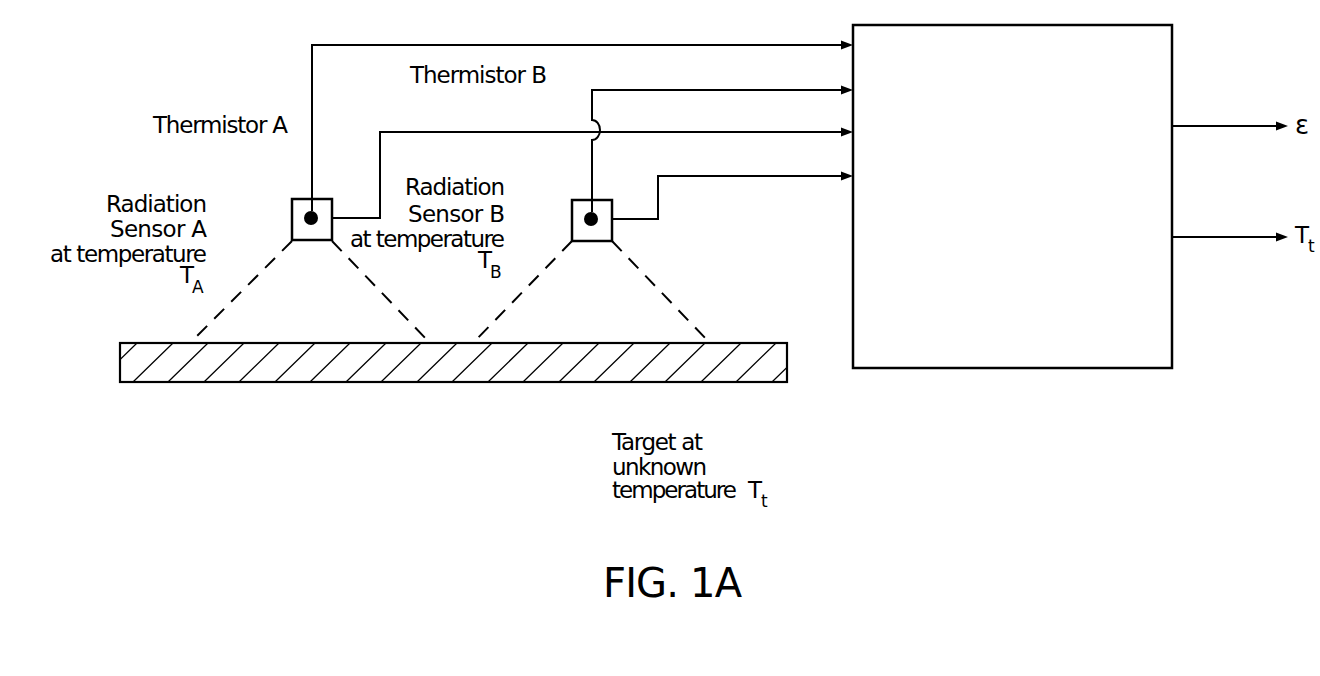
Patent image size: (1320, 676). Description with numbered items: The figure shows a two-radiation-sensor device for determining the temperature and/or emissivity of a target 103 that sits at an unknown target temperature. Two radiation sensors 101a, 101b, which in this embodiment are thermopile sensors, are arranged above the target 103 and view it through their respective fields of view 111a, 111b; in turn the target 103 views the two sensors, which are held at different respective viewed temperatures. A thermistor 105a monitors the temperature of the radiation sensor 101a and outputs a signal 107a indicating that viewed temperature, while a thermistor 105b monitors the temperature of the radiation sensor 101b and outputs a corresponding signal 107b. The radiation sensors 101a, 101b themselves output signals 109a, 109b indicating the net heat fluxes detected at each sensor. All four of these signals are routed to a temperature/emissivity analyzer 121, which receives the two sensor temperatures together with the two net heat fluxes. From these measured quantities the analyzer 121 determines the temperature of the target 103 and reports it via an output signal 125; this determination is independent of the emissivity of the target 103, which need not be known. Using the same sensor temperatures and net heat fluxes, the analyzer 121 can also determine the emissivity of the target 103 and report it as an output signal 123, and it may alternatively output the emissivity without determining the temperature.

The radiation sensor 101a is at (292, 218).
The radiation sensor 101b is at (572, 217).
The target 103 is at (634, 334).
The thermistor 105a is at (305, 215).
The thermistor 105b is at (584, 216).
The signal 107a is at (657, 43).
The signal 107b is at (658, 87).
The signal 109a is at (657, 130).
The signal 109b is at (695, 175).
The field of view 111a is at (244, 288).
The field of view 111b is at (523, 287).
The temperature/emissivity analyzer 121 is at (1032, 346).
The output signal 123 is at (1228, 124).
The output signal 125 is at (1228, 235).